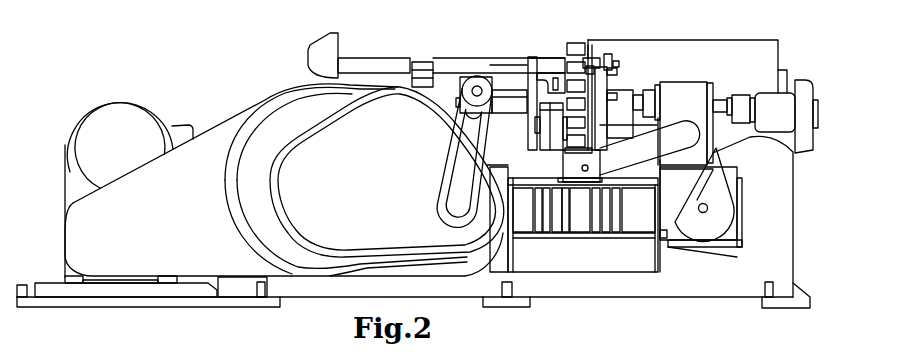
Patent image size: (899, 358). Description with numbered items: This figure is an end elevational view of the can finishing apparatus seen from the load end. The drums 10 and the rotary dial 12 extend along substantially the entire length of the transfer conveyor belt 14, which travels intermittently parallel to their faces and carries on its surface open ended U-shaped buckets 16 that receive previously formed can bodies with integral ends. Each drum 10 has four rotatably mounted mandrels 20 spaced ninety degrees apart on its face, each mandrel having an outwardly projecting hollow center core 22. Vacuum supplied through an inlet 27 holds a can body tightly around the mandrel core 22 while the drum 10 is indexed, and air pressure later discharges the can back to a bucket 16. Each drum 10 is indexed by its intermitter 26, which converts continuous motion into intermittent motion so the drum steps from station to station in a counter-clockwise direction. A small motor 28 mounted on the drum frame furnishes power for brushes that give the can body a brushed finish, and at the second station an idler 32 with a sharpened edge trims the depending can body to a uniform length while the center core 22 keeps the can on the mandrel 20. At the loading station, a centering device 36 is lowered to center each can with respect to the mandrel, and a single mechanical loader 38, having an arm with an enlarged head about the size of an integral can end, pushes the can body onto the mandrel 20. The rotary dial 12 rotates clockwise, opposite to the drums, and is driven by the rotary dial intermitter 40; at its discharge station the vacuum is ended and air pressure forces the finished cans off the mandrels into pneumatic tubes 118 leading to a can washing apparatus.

The drum 10 is at (600, 110).
The rotary dial 12 is at (610, 57).
The transfer conveyor belt 14 is at (543, 138).
The U-shaped bucket 16 is at (550, 113).
The mandrel 20 is at (583, 38).
The hollow center core 22 is at (580, 37).
The intermitter 26 is at (678, 93).
The vacuum inlet 27 is at (614, 70).
The small motor 28 is at (619, 63).
The idler 32 is at (591, 64).
The centering device 36 is at (533, 77).
The mechanical loader 38 is at (500, 82).
The rotary dial intermitter 40 is at (802, 80).
The pneumatic tube 118 is at (410, 73).